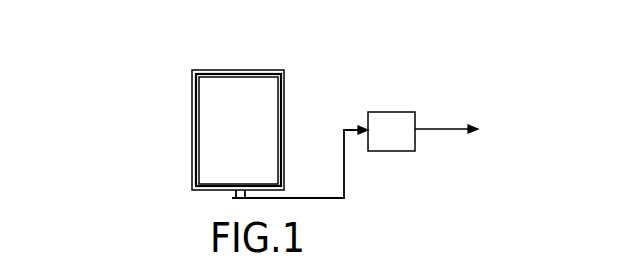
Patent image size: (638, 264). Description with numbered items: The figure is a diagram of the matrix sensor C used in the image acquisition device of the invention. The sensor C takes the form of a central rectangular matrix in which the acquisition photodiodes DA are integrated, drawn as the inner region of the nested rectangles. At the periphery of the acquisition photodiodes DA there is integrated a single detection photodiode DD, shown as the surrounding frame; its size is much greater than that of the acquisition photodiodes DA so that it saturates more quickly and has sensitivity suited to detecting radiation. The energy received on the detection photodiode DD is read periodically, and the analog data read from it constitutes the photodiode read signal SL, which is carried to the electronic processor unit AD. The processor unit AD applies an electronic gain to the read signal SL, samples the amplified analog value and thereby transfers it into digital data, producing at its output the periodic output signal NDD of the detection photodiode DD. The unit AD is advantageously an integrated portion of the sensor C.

The matrix sensor C is at (314, 69).
The detection photodiode DD is at (193, 117).
The acquisition photodiodes DA is at (219, 162).
The photodiode read signal SL is at (300, 162).
The electronic processor unit AD is at (393, 118).
The output signal NDD is at (459, 117).